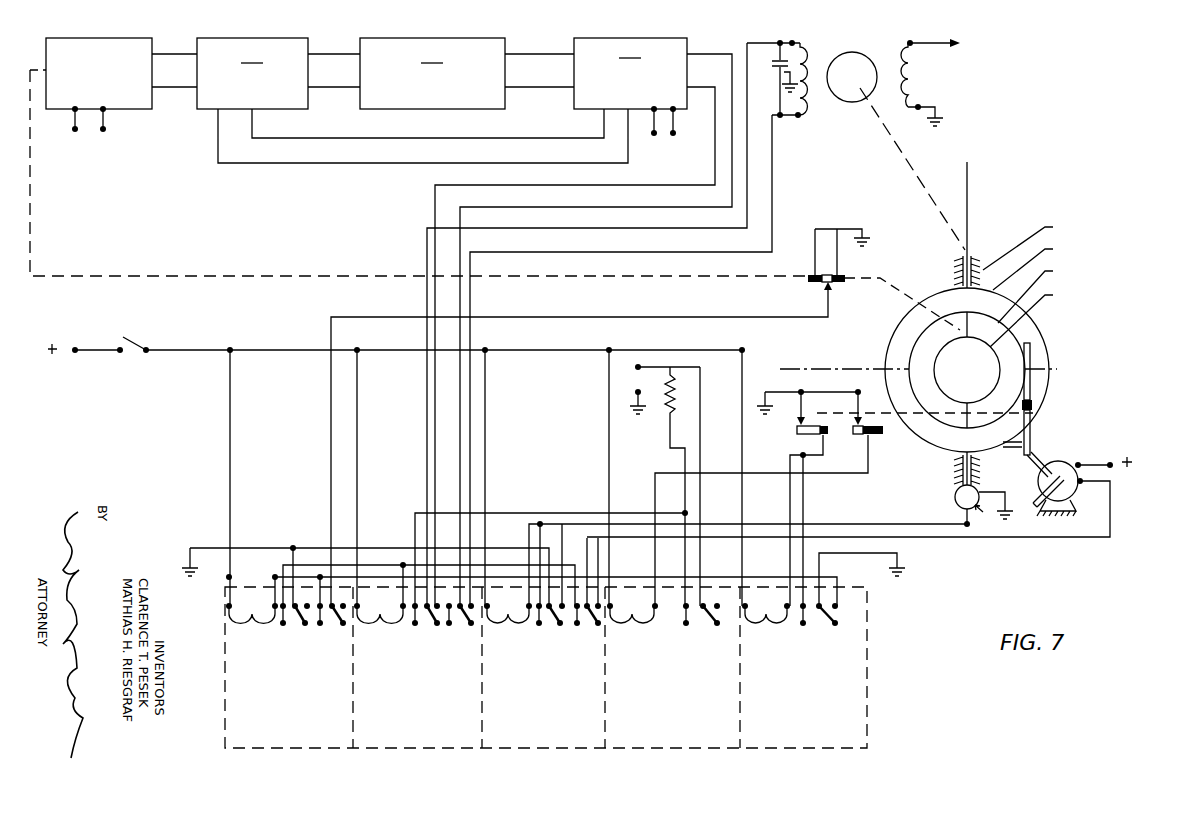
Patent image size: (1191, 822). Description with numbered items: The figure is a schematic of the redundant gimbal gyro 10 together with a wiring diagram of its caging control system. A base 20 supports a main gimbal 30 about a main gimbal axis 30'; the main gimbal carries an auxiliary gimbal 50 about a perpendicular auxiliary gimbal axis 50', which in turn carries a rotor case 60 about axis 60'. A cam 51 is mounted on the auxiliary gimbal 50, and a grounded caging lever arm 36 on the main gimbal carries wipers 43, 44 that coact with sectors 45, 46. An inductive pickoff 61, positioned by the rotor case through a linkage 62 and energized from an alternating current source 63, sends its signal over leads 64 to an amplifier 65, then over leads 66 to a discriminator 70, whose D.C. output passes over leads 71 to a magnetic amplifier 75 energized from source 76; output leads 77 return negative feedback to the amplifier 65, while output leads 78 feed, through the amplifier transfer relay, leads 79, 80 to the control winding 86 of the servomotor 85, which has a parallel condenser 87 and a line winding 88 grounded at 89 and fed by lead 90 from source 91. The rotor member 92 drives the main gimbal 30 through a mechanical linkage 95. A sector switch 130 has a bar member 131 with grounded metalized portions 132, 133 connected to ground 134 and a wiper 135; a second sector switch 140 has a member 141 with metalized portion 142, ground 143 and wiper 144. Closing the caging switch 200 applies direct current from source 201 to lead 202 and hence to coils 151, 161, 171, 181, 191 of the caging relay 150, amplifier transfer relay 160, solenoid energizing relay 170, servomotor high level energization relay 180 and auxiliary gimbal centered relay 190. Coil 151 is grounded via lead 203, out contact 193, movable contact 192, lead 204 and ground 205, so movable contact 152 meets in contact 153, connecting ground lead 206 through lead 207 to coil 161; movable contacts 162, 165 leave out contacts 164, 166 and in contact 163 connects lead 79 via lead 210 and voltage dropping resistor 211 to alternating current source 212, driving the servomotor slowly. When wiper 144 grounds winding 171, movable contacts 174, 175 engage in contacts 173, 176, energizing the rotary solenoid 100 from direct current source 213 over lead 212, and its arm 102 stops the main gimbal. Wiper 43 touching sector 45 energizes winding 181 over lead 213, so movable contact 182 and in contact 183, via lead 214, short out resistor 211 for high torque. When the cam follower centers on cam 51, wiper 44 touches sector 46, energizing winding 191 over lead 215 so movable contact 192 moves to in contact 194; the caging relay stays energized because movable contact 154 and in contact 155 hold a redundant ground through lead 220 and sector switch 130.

The redundant gimbal gyro 10 is at (1147, 326).
The base 20 is at (958, 272).
The main gimbal 30 is at (955, 370).
The main gimbal axis 30' is at (982, 225).
The caging lever arm 36 is at (1032, 441).
The wiper member 43 is at (839, 406).
The wiper member 44 is at (801, 409).
The sector 45 is at (891, 435).
The sector 46 is at (822, 435).
The auxiliary gimbal 50 is at (967, 370).
The auxiliary gimbal axis 50' is at (918, 360).
The cam 51 is at (1032, 356).
The rotor case 60 is at (958, 369).
The rotor case axis 60' is at (980, 370).
The pickoff means 61 is at (119, 38).
The linkage 62 is at (193, 274).
The source of alternating current 63 is at (100, 130).
The lead members 64 is at (183, 86).
The amplifier 65 is at (252, 73).
The leads 66 is at (352, 56).
The discriminator 70 is at (432, 73).
The leads 71 is at (553, 60).
The magnetic amplifier 75 is at (630, 73).
The source of alternating current 76 is at (670, 136).
The output leads 77 is at (505, 140).
The output leads 78 is at (728, 72).
The lead 79 is at (748, 45).
The lead 80 is at (772, 116).
The servomotor 85 is at (844, 48).
The control winding 86 is at (800, 115).
The condenser 87 is at (778, 63).
The line winding 88 is at (913, 76).
The ground 89 is at (940, 116).
The lead 90 is at (941, 42).
The source of alternating current 91 is at (975, 37).
The rotor member 92 is at (845, 100).
The mechanical linkage 95 is at (910, 158).
The rotary solenoid 100 is at (878, 477).
The rotatable arm 102 is at (1055, 511).
The sector switch 130 is at (790, 300).
The bar member 131 is at (833, 290).
The metalized portion 132 is at (812, 272).
The metalized portion 133 is at (845, 280).
The ground 134 is at (862, 243).
The wiper member 135 is at (826, 299).
The sector switch 140 is at (922, 483).
The member 141 is at (989, 520).
The metalized portion 142 is at (976, 474).
The ground 143 is at (1005, 504).
The wiper member 144 is at (965, 511).
The caging relay 150 is at (268, 695).
The coil 151 is at (255, 628).
The movable contact 152 is at (304, 626).
The in contact 153 is at (284, 627).
The movable contact 154 is at (344, 626).
The in contact 155 is at (321, 625).
The amplifier transfer relay 160 is at (407, 695).
The coil 161 is at (385, 628).
The movable contact 162 is at (434, 626).
The in contact 163 is at (414, 627).
The out contact 164 is at (439, 625).
The movable contact 165 is at (454, 626).
The out contact 166 is at (473, 628).
The solenoid energizing relay 170 is at (529, 693).
The winding 171 is at (513, 632).
The in contact 173 is at (531, 627).
The movable contact 174 is at (560, 626).
The movable contact 175 is at (598, 628).
The in contact 176 is at (567, 627).
The servomotor high level energization relay 180 is at (659, 693).
The winding 181 is at (645, 632).
The movable contact 182 is at (714, 627).
The in contact 183 is at (687, 628).
The auxiliary gimbal centered relay 190 is at (772, 693).
The winding 191 is at (770, 632).
The movable contact 192 is at (838, 626).
The out contact 193 is at (834, 626).
The in contact 194 is at (797, 627).
The caging switch 200 is at (118, 359).
The source of direct current 201 is at (56, 352).
The lead 202 is at (182, 350).
The lead 203 is at (283, 577).
The lead 204 is at (897, 553).
The ground 205 is at (184, 580).
The lead 206 is at (317, 548).
The lead 207 is at (375, 564).
The lead 210 is at (567, 513).
The voltage dropping resistor 211 is at (673, 415).
The source of alternating current 212 is at (632, 377).
The lead 213 is at (1128, 468).
The lead 214 is at (700, 504).
The lead 215 is at (787, 460).
The lead 220 is at (580, 317).